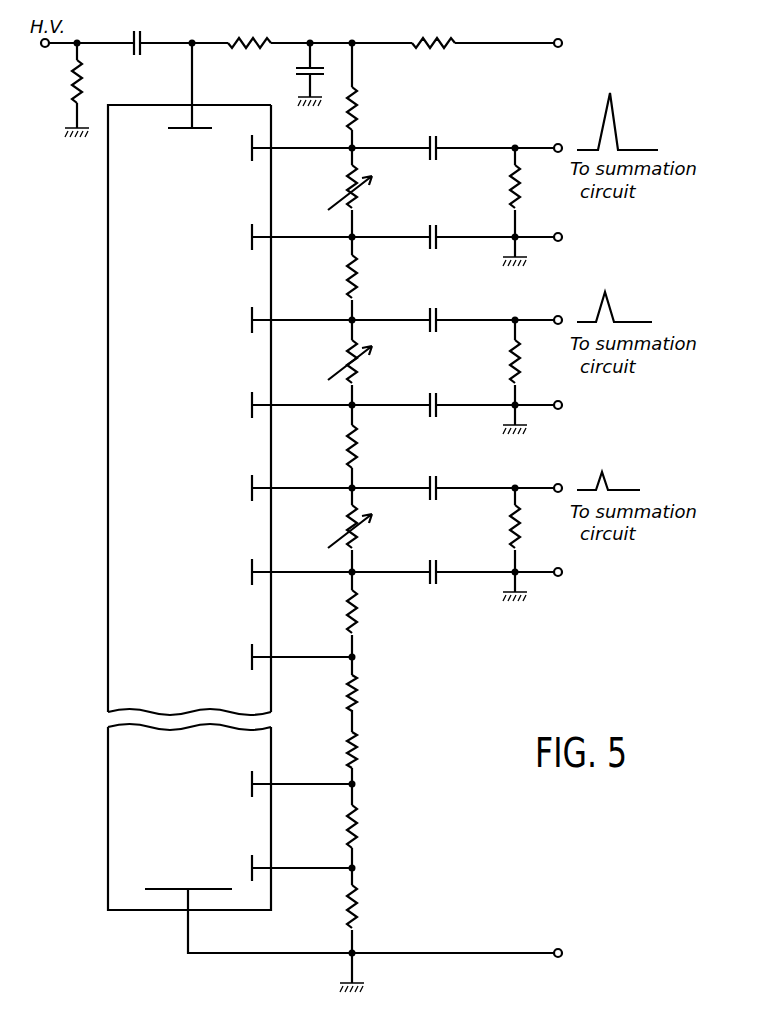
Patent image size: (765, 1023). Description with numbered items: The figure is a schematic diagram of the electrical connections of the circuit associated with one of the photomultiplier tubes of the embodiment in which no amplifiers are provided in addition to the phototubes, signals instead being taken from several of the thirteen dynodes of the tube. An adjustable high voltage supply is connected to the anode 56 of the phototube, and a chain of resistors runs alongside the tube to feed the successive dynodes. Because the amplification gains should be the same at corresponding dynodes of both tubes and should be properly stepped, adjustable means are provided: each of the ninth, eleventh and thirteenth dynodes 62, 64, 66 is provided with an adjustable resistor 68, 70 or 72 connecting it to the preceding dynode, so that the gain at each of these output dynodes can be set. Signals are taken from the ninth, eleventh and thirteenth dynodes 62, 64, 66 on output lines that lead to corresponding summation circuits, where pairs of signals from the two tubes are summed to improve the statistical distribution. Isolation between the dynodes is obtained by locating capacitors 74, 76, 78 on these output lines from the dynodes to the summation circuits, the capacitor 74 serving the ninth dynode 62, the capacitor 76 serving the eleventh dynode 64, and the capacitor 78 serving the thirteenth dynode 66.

The anode 56 is at (200, 132).
The ninth dynode 62 is at (252, 497).
The eleventh dynode 64 is at (252, 308).
The thirteenth dynode 66 is at (253, 156).
The adjustable resistor 68 is at (355, 546).
The adjustable resistor 70 is at (353, 378).
The adjustable resistor 72 is at (353, 205).
The capacitor 74 is at (436, 478).
The capacitor 76 is at (437, 312).
The capacitor 78 is at (436, 144).